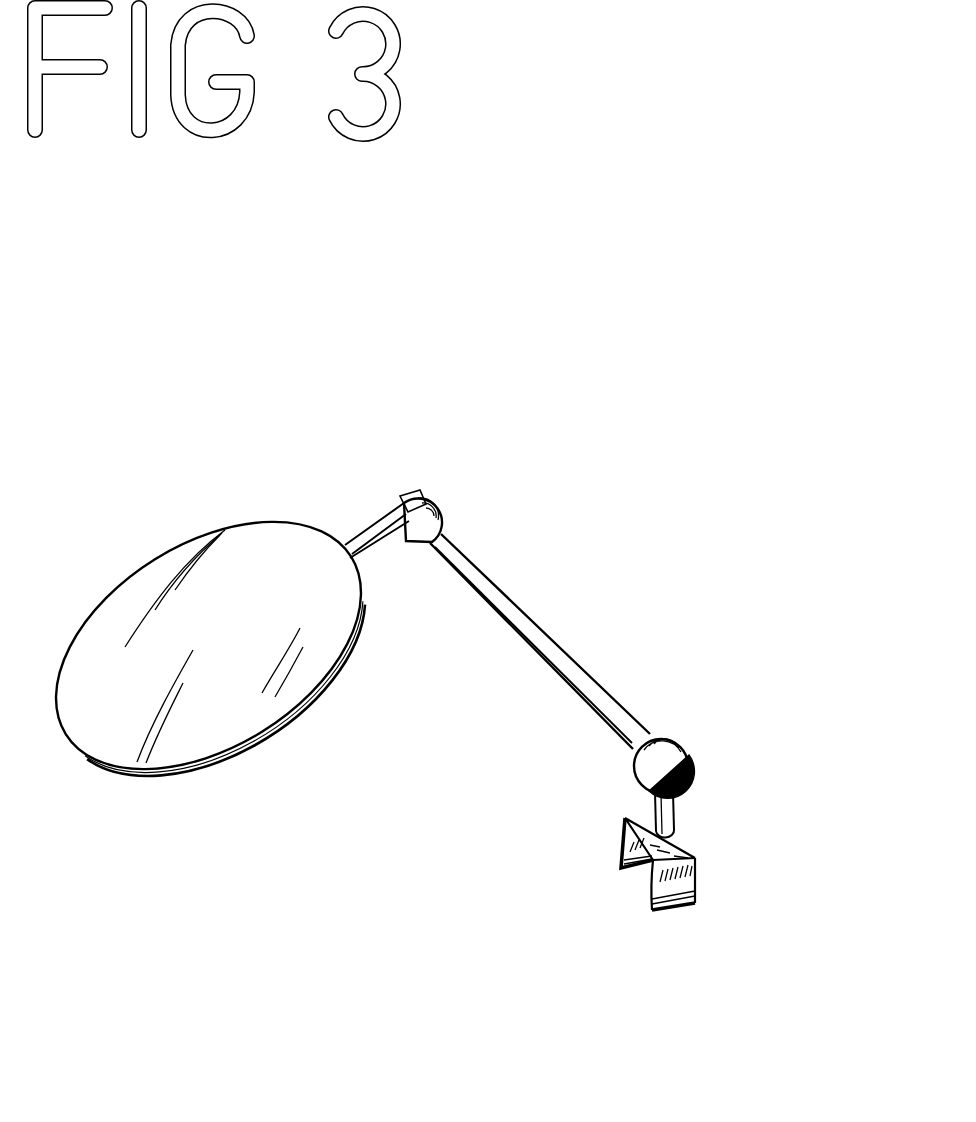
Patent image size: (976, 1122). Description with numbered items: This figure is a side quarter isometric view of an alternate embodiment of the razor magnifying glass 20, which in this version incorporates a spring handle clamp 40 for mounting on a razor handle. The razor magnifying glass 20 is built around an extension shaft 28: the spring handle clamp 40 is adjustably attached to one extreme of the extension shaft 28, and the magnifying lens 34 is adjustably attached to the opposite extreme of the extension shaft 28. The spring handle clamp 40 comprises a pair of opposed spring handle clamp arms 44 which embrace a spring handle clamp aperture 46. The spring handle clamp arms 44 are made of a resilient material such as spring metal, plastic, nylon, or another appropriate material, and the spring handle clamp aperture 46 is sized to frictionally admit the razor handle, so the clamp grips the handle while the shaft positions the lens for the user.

The razor magnifying glass 20 is at (442, 671).
The magnifying lens 34 is at (210, 638).
The extension shaft 28 is at (530, 664).
The spring handle clamp 40 is at (672, 881).
The spring handle clamp arms 44 is at (672, 851).
The spring handle clamp aperture 46 is at (586, 929).